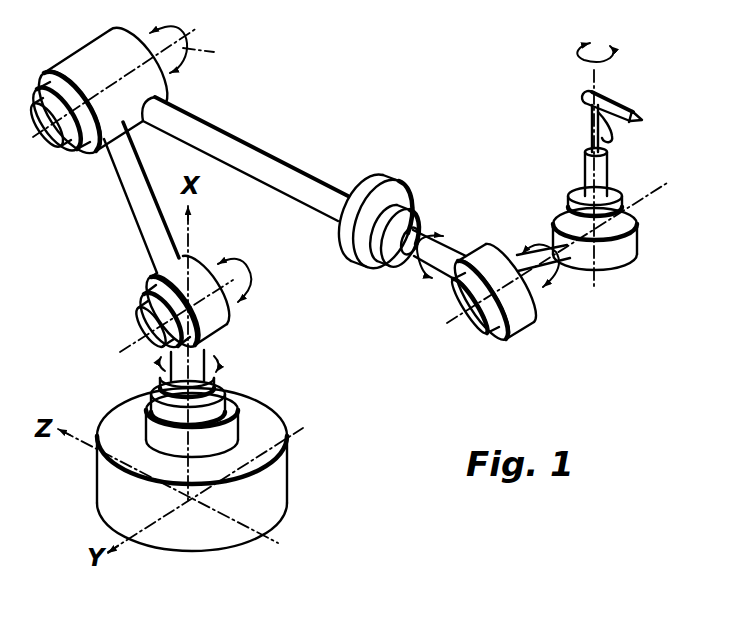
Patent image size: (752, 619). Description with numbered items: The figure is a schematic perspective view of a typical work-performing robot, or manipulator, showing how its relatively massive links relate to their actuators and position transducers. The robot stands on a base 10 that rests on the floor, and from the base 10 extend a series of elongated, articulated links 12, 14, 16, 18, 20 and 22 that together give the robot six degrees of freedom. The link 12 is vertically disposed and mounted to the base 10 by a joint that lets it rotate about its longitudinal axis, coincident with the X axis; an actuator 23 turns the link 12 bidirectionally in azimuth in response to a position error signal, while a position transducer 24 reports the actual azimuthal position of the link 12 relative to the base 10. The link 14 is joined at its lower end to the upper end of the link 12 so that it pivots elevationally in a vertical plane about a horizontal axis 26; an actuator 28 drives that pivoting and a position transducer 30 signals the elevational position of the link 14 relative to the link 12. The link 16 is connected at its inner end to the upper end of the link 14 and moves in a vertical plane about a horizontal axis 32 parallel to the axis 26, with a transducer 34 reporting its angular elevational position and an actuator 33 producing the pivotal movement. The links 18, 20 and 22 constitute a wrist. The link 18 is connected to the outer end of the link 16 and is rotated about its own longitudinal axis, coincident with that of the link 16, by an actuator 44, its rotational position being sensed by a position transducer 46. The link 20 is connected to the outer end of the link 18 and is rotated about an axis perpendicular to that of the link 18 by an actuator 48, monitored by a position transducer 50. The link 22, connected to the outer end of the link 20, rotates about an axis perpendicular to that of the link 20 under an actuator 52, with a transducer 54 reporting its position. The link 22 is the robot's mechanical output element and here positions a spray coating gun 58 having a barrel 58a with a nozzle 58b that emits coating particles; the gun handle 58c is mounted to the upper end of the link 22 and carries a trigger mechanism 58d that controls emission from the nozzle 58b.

The base 10 is at (268, 490).
The link 12 is at (210, 357).
The link 14 is at (147, 212).
The link 16 is at (275, 167).
The link 18 is at (448, 252).
The link 20 is at (565, 278).
The link 22 is at (606, 170).
The actuator 23 is at (232, 428).
The position transducer 24 is at (237, 390).
The horizontal axis 26 is at (130, 338).
The actuator 28 is at (225, 313).
The position transducer 30 is at (139, 296).
The horizontal axis 32 is at (228, 54).
The actuator 33 is at (98, 46).
The transducer 34 is at (65, 145).
The actuator 44 is at (376, 187).
The position transducer 46 is at (418, 218).
The actuator 48 is at (534, 322).
The position transducer 50 is at (480, 328).
The actuator 52 is at (633, 252).
The transducer 54 is at (638, 216).
The spray coating gun 58 is at (613, 88).
The barrel 58a is at (623, 102).
The nozzle 58b is at (643, 122).
The gun handle 58c is at (590, 105).
The trigger mechanism 58d is at (603, 141).